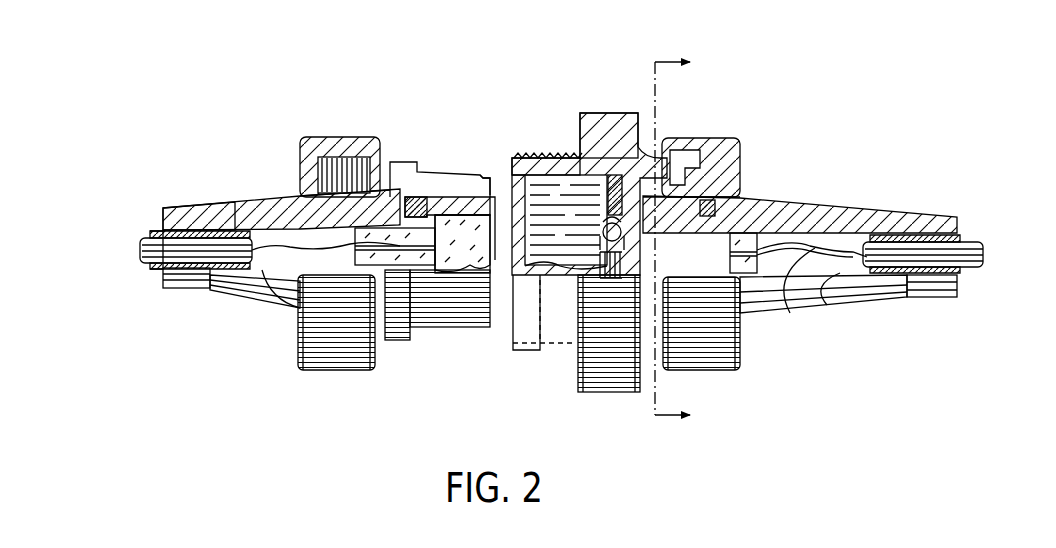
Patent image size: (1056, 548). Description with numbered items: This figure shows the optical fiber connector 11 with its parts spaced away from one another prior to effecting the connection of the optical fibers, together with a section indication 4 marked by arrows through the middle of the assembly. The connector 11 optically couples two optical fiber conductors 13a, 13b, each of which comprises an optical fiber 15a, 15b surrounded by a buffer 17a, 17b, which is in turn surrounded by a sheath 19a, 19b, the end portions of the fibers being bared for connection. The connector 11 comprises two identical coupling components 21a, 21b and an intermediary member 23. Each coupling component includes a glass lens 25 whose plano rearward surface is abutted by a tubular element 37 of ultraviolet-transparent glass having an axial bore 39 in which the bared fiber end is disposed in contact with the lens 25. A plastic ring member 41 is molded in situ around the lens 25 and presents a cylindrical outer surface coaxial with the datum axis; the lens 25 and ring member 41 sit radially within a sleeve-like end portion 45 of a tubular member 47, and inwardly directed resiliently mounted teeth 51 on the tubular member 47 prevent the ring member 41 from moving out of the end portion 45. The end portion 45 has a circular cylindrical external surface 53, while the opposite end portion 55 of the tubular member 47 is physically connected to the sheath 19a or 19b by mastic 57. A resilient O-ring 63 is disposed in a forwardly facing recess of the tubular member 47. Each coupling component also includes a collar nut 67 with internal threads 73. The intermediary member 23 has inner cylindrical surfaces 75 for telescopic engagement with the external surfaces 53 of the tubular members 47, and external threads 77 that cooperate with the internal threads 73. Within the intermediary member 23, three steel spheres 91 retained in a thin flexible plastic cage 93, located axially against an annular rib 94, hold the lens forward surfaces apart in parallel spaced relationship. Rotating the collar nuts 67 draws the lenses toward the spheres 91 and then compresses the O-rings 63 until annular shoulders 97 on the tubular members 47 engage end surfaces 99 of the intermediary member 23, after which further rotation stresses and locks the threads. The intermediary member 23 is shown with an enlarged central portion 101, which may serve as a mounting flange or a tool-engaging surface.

The connector 11 is at (738, 97).
The optical fiber conductor 13a is at (132, 250).
The optical fiber conductor 13b is at (993, 258).
The optical fiber 15a is at (280, 292).
The optical fiber 15b is at (808, 302).
The buffer 17a is at (265, 285).
The buffer 17b is at (862, 303).
The sheath 19a is at (150, 238).
The sheath 19b is at (960, 240).
The coupling component 21a is at (345, 108).
The coupling component 21b is at (738, 122).
The intermediary member 23 is at (588, 90).
The lens 25 is at (450, 210).
The tubular element 37 is at (398, 270).
The axial bore 39 is at (440, 265).
The ring member 41 is at (435, 197).
The sleeve-like end portion 45 is at (462, 225).
The tubular member 47 is at (258, 215).
The teeth 51 is at (485, 180).
The external surface 53 is at (416, 197).
The end portion 55 is at (205, 215).
The mastic 57 is at (162, 270).
The O-ring 63 is at (300, 205).
The collar nut 67 is at (348, 330).
The internal threads 73 is at (372, 160).
The inner cylindrical surfaces 75 is at (520, 200).
The external threads 77 is at (580, 150).
The spheres 91 is at (580, 380).
The cage 93 is at (575, 355).
The annular rib 94 is at (628, 160).
The annular shoulders 97 is at (400, 180).
The end surfaces 99 is at (535, 150).
The enlarged central portion 101 is at (618, 365).
The section line 4- 4 is at (687, 240).